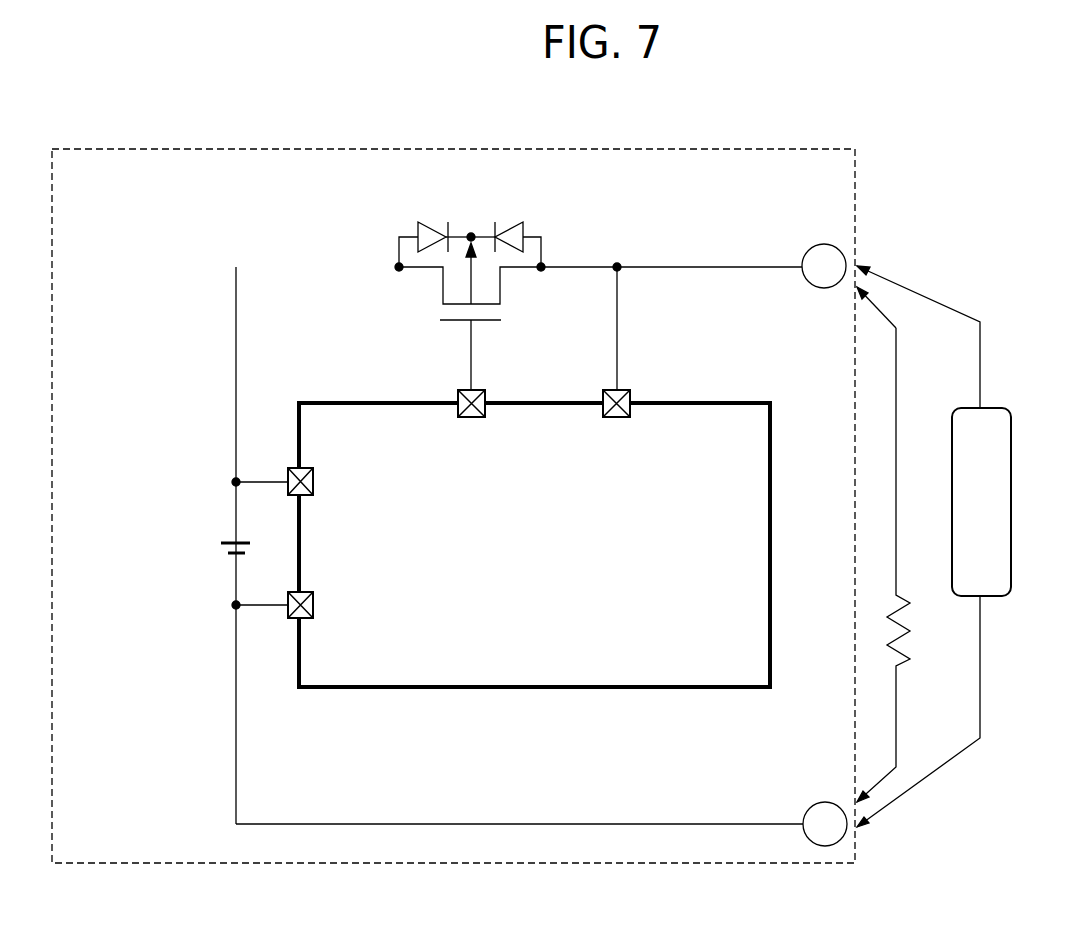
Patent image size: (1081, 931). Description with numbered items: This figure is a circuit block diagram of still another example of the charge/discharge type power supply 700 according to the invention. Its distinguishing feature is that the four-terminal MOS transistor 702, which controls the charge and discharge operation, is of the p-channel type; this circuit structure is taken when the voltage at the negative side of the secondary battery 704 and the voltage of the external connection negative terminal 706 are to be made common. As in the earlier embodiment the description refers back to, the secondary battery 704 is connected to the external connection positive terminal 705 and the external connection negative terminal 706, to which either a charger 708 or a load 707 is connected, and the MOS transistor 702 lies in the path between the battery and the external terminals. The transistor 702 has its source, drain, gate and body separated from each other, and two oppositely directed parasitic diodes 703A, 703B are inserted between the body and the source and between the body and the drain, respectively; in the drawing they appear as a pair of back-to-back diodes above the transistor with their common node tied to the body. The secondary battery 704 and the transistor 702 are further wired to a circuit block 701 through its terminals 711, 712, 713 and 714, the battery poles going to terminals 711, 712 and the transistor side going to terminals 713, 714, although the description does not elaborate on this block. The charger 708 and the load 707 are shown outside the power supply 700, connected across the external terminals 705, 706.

The battery pack 700 is at (335, 149).
The protection circuit / control IC 701 is at (440, 687).
The four-terminal MOS transistor 702 is at (508, 285).
The diode 703A is at (443, 222).
The diode 703B is at (515, 220).
The secondary battery 704 is at (220, 550).
The positive terminal 705 is at (812, 246).
The external connection negative terminal 706 is at (812, 806).
The resistor 707 is at (888, 622).
The charger 708 is at (1011, 490).
The terminal of protection circuit 711 is at (313, 481).
The terminal of protection circuit 712 is at (313, 604).
The terminal of protection circuit 713 is at (470, 417).
The terminal of protection circuit 714 is at (617, 417).